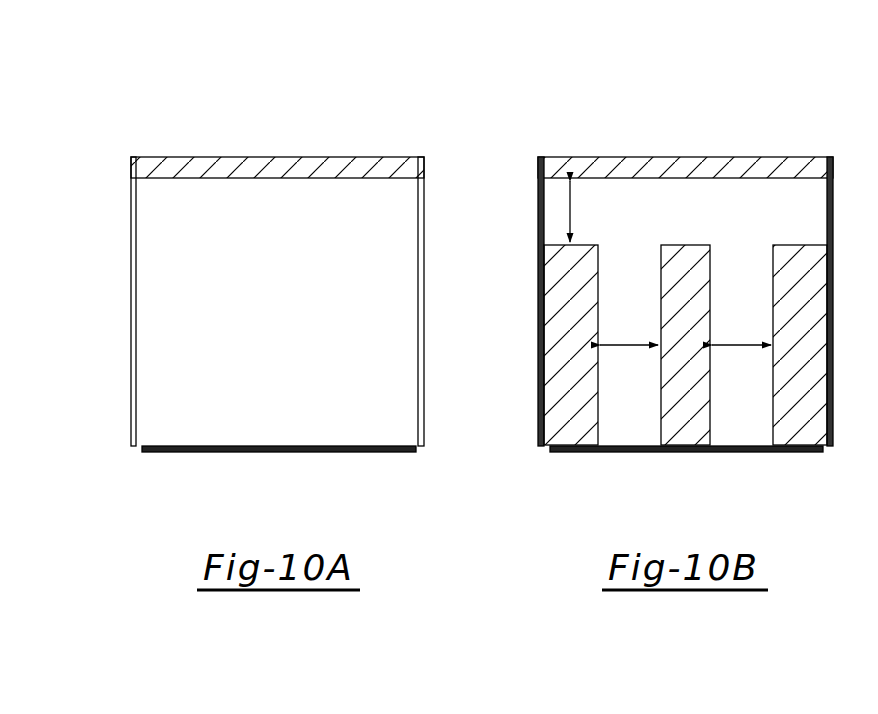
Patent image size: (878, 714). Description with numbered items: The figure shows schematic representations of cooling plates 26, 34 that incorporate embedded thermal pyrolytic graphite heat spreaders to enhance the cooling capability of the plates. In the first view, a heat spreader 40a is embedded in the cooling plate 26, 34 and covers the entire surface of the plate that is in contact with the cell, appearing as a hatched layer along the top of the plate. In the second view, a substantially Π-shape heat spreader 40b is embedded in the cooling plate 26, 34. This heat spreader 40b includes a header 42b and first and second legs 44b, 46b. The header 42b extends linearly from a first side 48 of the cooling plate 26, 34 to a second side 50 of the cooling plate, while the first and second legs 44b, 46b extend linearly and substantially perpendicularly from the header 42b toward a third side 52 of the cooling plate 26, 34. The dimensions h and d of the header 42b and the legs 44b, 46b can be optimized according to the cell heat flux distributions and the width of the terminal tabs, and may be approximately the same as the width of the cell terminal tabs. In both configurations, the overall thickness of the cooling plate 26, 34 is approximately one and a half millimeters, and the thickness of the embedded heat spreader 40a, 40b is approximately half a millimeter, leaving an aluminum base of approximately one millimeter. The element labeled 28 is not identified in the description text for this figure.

In FIG. 10A, the heat spreader 40a is at (160, 196).
In FIG. 10B, the heat spreader 40b is at (555, 199).
In FIG. 10B, the header 42b is at (687, 200).
In FIG. 10B, the first leg 44b is at (627, 422).
In FIG. 10B, the second leg 46b is at (757, 422).
In FIG. 10B, the first side 48 is at (541, 278).
In FIG. 10B, the second side 50 is at (830, 278).
In FIG. 10B, the third side 52 is at (648, 451).
In FIG. 10A, the cooling plate 26 is at (242, 304).
In FIG. 10B, the cooling plate 26 is at (647, 345).
In FIG. 10A, the cooling plate 34 is at (165, 383).
In FIG. 10B, the cooling plate 34 is at (572, 383).
In FIG. 10B, the substrate body 28 is at (875, 391).